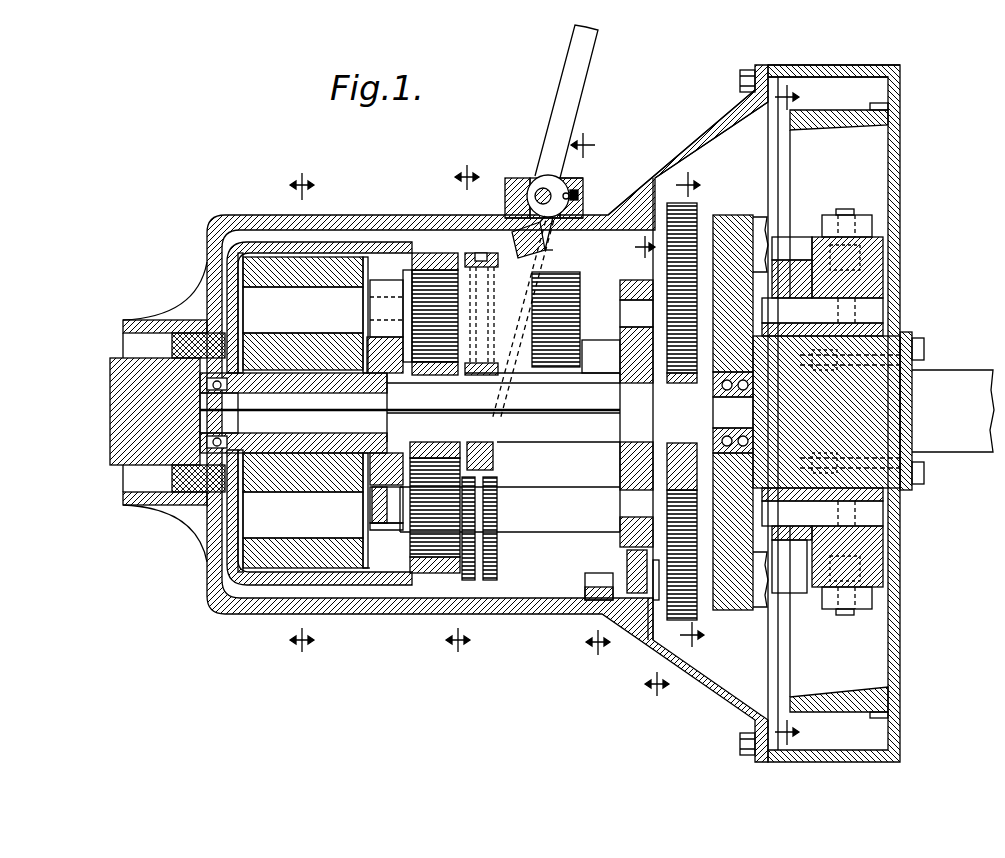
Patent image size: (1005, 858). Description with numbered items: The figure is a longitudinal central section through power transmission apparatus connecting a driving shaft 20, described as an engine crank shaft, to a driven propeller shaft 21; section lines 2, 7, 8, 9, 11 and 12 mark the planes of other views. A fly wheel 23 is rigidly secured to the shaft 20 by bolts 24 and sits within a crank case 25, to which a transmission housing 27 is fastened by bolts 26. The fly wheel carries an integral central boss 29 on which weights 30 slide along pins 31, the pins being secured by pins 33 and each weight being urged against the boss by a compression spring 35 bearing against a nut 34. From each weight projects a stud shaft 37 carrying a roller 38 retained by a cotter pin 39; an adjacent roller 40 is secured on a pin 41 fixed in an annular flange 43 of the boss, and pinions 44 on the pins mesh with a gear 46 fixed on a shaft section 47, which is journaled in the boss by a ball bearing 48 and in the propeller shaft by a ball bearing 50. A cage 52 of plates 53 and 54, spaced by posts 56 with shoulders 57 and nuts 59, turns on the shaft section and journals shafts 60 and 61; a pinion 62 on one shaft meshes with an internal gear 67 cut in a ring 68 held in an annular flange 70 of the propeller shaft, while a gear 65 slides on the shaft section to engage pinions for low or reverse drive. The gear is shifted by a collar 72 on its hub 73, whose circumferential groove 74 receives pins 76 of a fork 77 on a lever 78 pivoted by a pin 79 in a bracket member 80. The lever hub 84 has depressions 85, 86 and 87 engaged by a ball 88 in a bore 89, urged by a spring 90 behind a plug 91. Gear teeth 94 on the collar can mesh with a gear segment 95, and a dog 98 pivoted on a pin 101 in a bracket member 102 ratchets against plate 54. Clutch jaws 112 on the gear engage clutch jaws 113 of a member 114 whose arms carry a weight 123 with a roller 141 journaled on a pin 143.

The section line 2 is at (462, 410).
The section line 7 is at (590, 397).
The section line 8 is at (647, 474).
The section line 9 is at (696, 409).
The section line 11 is at (796, 411).
The section line 12 is at (302, 419).
The driving shaft 20 is at (962, 382).
The driven shaft 21 is at (120, 399).
The fly wheel 23 is at (898, 162).
The bolts 24 is at (920, 339).
The crank case 25 is at (858, 66).
The bolts 26 is at (740, 80).
The transmission housing 27 is at (672, 176).
The central boss 29 is at (880, 340).
The weights 30 is at (885, 268).
The pins 31 is at (888, 246).
The pins 33 is at (900, 362).
The nut 34 is at (828, 215).
The compression spring 35 is at (848, 214).
The stud shaft 37 is at (880, 307).
The roller 38 is at (796, 258).
The cotter pin 39 is at (758, 218).
The roller 40 is at (800, 590).
The pins 41 is at (658, 262).
The annular flange 43 is at (724, 216).
The pinions 44 is at (680, 220).
The gear 46 is at (668, 470).
The shaft section 47 is at (545, 433).
The ball bearing 48 is at (713, 408).
The ball bearing 50 is at (238, 430).
The cage 52 is at (630, 300).
The plate 53 is at (377, 547).
The plate 54 is at (620, 453).
The posts 56 is at (546, 494).
The shoulders 57 is at (405, 498).
The nuts 59 is at (386, 530).
The shaft 60 is at (480, 266).
The shaft 61 is at (406, 290).
The pinion 62 is at (410, 311).
The gear 65 is at (442, 487).
The internal gear 67 is at (407, 262).
The ring 68 is at (422, 268).
The annular flange 70 is at (290, 242).
The collar 72 is at (497, 563).
The hub 73 is at (520, 377).
The circumferential groove 74 is at (476, 546).
The pins 76 is at (505, 410).
The fork 77 is at (535, 262).
The lever 78 is at (546, 125).
The pin 79 is at (536, 193).
The bracket member 80 is at (520, 188).
The hub 84 is at (536, 190).
The depression 85 is at (535, 178).
The depression 86 is at (550, 232).
The depression 87 is at (530, 248).
The ball 88 is at (574, 216).
The bore 89 is at (576, 180).
The spring 90 is at (578, 190).
The plug 91 is at (570, 196).
The gear teeth 94 is at (466, 252).
The gear segment 95 is at (592, 574).
The dog 98 is at (627, 545).
The pin 101 is at (630, 616).
The bracket member 102 is at (632, 572).
The clutch jaws 112 is at (405, 428).
The clutch jaws 113 is at (405, 392).
The member 114 is at (318, 393).
The weight 123 is at (355, 215).
The roller 141 is at (313, 258).
The pin 143 is at (257, 303).